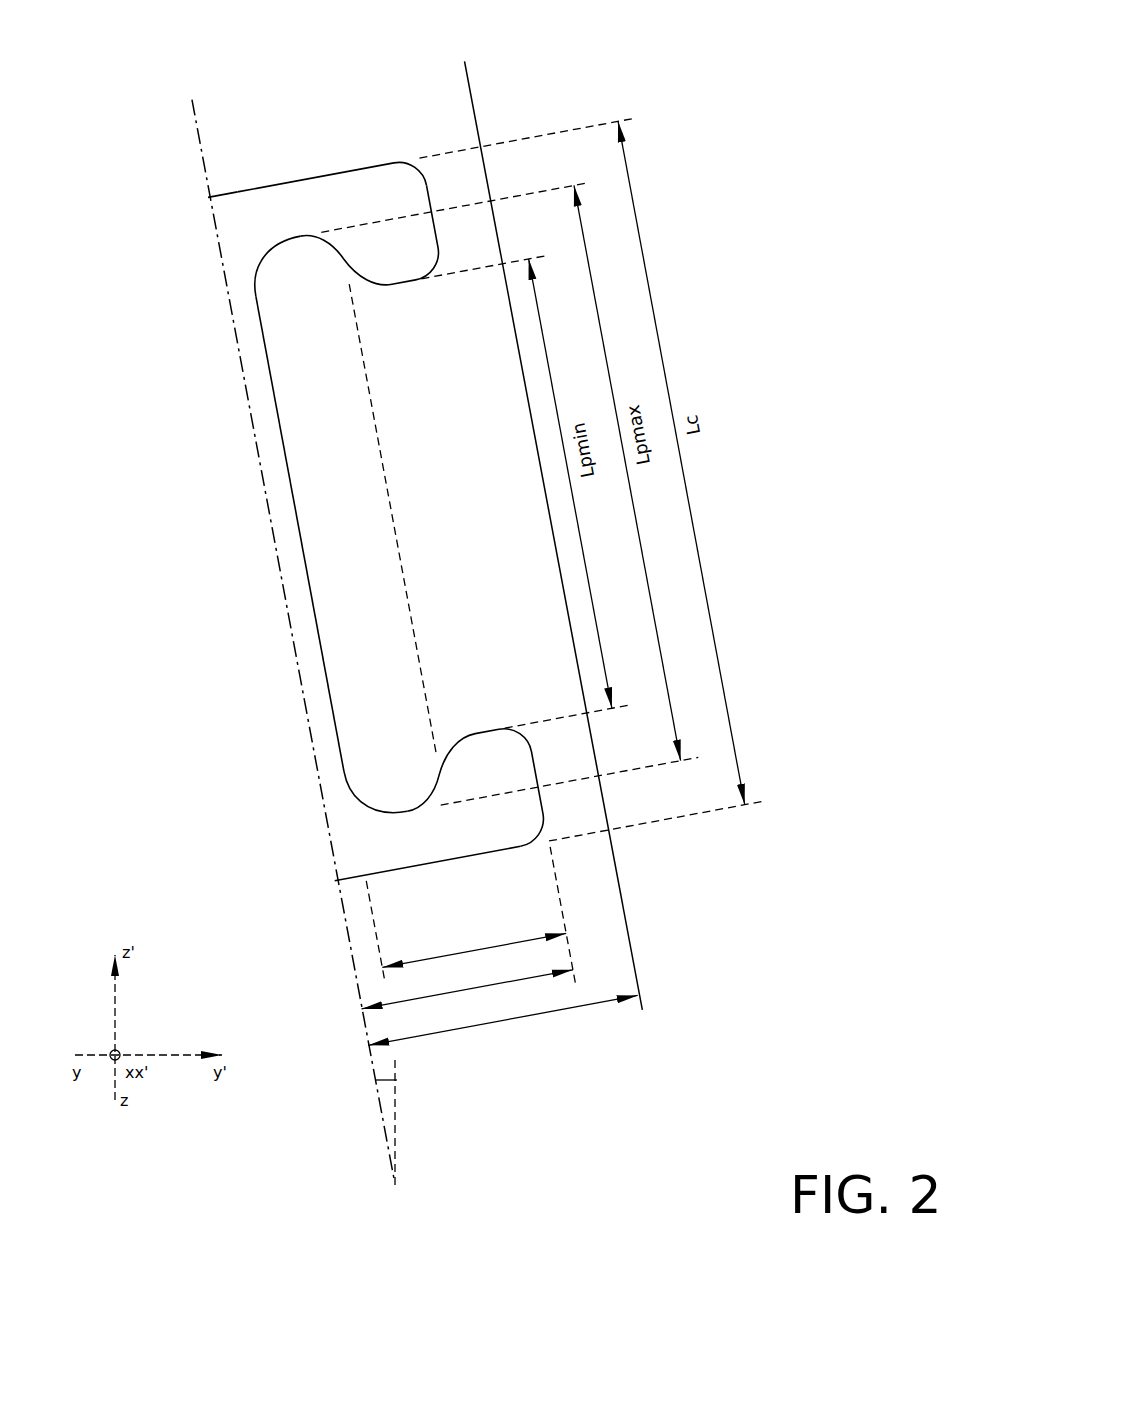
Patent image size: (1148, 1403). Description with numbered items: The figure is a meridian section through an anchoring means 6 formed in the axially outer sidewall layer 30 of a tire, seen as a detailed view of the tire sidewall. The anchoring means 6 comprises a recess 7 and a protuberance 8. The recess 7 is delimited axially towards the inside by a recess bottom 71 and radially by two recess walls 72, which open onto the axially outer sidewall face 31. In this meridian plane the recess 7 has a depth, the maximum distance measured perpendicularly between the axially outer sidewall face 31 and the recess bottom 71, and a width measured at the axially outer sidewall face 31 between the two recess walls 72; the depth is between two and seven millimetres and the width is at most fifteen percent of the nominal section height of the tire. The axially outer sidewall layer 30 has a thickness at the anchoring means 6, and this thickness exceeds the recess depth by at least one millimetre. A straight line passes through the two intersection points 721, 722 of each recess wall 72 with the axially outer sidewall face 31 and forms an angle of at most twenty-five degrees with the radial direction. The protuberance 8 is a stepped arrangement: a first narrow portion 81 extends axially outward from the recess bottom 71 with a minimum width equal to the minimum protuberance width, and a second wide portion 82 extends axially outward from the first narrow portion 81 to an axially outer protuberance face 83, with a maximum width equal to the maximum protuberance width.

The anchoring means 6 is at (183, 497).
The recess 7 is at (270, 220).
The protuberance 8 is at (382, 489).
The axially outer sidewall layer 30 is at (263, 120).
The axially outer sidewall face 31 is at (197, 147).
The recess bottom 71 is at (432, 190).
The recess walls 72 is at (320, 176).
The first narrow portion 81 is at (465, 590).
The second wide portion 82 is at (380, 730).
The axially outer protuberance face 83 is at (280, 437).
The intersection point 721 is at (200, 202).
The intersection point 722 is at (337, 883).